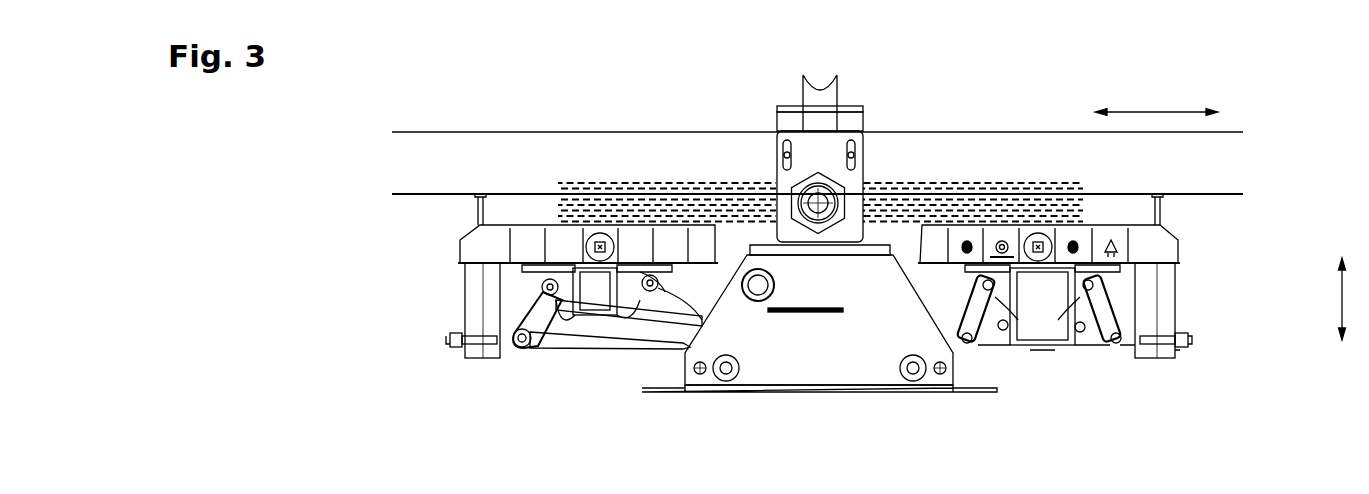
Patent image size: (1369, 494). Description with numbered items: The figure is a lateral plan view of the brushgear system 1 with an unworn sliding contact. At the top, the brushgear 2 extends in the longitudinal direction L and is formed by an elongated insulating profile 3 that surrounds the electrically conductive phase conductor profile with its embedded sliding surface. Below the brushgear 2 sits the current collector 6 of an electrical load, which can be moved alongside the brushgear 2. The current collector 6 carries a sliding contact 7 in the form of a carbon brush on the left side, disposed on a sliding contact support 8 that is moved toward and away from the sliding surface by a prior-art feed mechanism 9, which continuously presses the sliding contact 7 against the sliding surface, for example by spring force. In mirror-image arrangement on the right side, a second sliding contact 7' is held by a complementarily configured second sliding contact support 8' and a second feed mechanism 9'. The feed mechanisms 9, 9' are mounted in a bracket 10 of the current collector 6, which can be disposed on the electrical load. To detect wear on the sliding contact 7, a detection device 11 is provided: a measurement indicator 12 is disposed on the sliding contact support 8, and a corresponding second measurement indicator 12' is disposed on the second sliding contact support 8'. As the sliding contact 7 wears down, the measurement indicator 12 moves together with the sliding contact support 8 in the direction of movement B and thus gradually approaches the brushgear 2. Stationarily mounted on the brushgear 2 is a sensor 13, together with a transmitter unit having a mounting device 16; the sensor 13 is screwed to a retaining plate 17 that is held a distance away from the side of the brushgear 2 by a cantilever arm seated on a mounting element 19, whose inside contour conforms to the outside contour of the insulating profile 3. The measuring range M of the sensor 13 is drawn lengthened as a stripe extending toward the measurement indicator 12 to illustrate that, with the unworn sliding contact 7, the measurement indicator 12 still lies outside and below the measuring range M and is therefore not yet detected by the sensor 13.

The brushgear system 1 is at (1240, 84).
The brushgear 2 is at (519, 124).
The insulating profile 3 is at (440, 148).
The current collector 6 is at (1110, 383).
The sliding contact 7 is at (420, 230).
The second sliding contact 7' is at (1218, 229).
The sliding contact support 8 is at (430, 310).
The second sliding contact support 8' is at (1209, 310).
The feed mechanism 9 is at (591, 343).
The second feed mechanism 9' is at (1039, 351).
The bracket 10 is at (643, 388).
The detection device 11 is at (750, 115).
The measurement indicator 12 is at (584, 179).
The second measurement indicator 12' is at (1056, 178).
The sensor 13 is at (840, 184).
The mounting device 16 is at (789, 99).
The retaining plate 17 is at (860, 130).
The mounting element 19 is at (850, 105).
The measuring range M is at (665, 183).
The longitudinal direction L is at (1156, 103).
The direction of movement B is at (1351, 299).